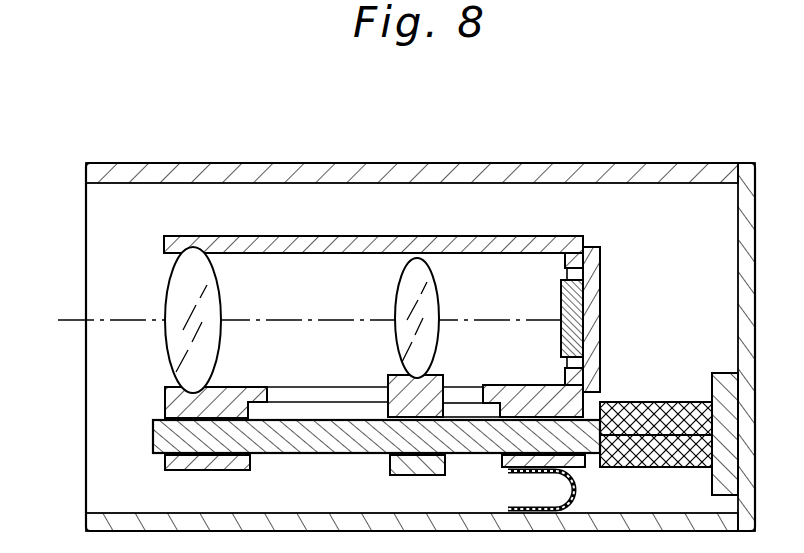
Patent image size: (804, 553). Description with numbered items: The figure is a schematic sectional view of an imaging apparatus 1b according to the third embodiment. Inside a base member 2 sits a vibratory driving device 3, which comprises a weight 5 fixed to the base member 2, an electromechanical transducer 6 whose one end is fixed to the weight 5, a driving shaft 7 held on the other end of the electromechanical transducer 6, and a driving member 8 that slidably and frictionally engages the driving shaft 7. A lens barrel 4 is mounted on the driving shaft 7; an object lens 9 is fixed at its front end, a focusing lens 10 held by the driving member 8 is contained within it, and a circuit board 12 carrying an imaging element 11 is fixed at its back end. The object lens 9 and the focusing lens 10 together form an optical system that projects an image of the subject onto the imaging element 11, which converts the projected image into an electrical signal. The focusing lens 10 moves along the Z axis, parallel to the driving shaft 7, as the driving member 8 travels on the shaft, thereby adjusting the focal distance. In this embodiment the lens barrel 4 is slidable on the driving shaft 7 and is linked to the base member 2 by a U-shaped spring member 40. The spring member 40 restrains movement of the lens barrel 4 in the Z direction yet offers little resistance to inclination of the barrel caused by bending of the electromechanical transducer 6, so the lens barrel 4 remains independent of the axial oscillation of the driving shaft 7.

The imaging apparatus 1b is at (355, 158).
The base member 2 is at (478, 163).
The vibratory driving device 3 is at (625, 386).
The lens barrel 4 is at (567, 236).
The weight 5 is at (725, 373).
The electromechanical transducer 6 is at (683, 402).
The driving shaft 7 is at (470, 455).
The driving member 8 is at (392, 470).
The object lens 9 is at (167, 283).
The focusing lens 10 is at (440, 290).
The imaging element 11 is at (560, 336).
The circuit board 12 is at (600, 272).
The spring member 40 is at (577, 492).